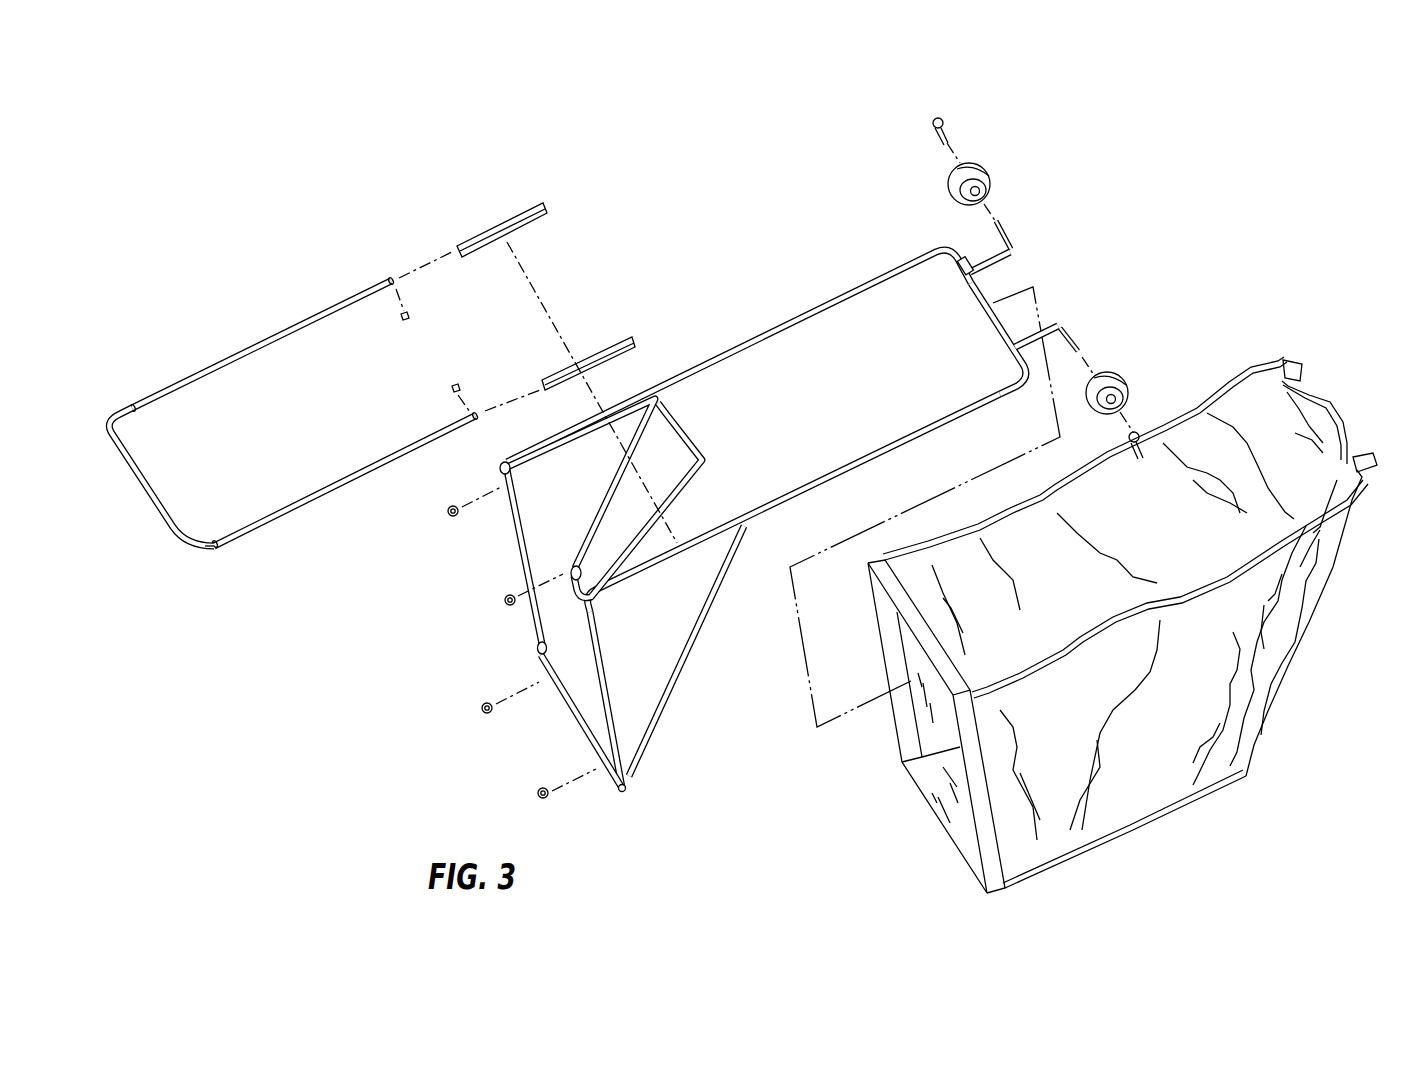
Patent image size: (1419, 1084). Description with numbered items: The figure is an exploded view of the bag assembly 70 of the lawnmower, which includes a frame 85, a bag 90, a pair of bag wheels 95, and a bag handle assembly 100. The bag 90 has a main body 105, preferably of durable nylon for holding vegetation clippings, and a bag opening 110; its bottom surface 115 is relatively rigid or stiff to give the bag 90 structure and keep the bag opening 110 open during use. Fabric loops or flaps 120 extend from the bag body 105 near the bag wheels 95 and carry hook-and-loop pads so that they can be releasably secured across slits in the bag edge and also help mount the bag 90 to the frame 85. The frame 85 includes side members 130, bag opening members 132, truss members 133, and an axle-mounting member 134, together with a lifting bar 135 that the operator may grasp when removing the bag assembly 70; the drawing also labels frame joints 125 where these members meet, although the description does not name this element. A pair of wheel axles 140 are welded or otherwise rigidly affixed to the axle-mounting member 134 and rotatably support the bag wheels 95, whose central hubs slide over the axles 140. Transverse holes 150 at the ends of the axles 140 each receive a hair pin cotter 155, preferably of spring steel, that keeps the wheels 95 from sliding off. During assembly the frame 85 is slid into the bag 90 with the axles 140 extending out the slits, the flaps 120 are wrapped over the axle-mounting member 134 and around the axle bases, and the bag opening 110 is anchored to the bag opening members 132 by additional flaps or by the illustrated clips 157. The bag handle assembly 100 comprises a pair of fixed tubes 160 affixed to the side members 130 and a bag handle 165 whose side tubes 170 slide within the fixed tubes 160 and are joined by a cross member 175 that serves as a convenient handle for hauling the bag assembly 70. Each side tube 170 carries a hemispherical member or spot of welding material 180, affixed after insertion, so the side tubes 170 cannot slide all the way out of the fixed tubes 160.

The bag assembly 70 is at (896, 502).
The frame 85 is at (784, 464).
The bag 90 is at (1113, 615).
The bag wheels 95 is at (978, 166).
The bag handle assembly 100 is at (293, 417).
The main body 105 is at (1188, 746).
The bag opening 110 is at (927, 782).
The bottom surface 115 is at (1138, 832).
The fabric loops or flaps 120 is at (1283, 363).
The pivot joint 125 is at (501, 469).
The side members 130 is at (735, 348).
The bag opening members 132 is at (606, 717).
The truss members 133 is at (615, 480).
The axle-mounting member 134 is at (980, 302).
The lifting bar 135 is at (688, 430).
The wheel axles 140 is at (1015, 246).
The transverse holes 150 is at (997, 214).
The hair pin cotter 155 is at (950, 130).
The clips 157 is at (451, 517).
The fixed tubes 160 is at (518, 208).
The bag handle 165 is at (236, 560).
The side tubes 170 is at (208, 380).
The cross member 175 is at (153, 484).
The hemispherical member or spot of welding material 180 is at (401, 317).